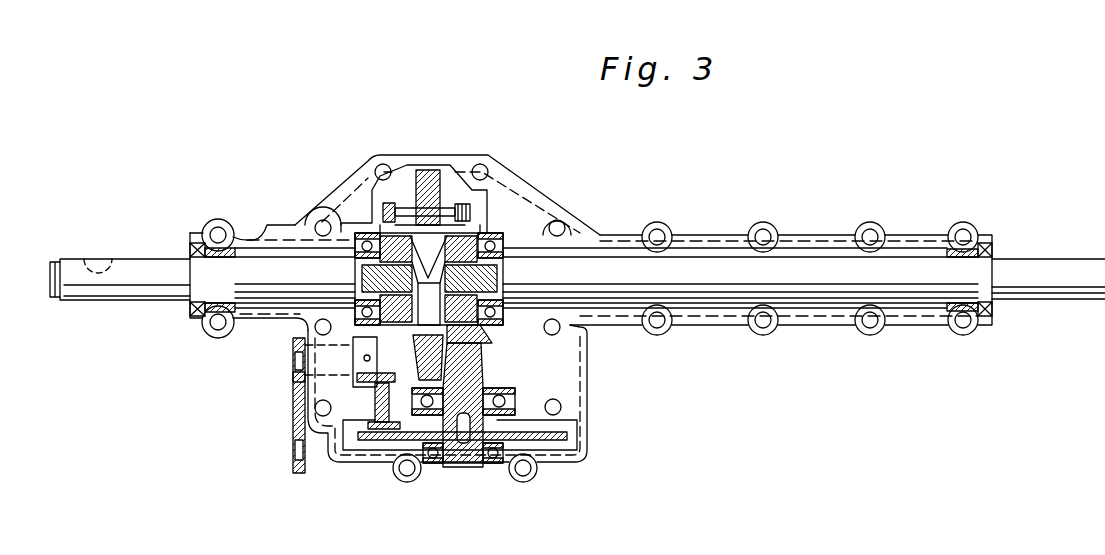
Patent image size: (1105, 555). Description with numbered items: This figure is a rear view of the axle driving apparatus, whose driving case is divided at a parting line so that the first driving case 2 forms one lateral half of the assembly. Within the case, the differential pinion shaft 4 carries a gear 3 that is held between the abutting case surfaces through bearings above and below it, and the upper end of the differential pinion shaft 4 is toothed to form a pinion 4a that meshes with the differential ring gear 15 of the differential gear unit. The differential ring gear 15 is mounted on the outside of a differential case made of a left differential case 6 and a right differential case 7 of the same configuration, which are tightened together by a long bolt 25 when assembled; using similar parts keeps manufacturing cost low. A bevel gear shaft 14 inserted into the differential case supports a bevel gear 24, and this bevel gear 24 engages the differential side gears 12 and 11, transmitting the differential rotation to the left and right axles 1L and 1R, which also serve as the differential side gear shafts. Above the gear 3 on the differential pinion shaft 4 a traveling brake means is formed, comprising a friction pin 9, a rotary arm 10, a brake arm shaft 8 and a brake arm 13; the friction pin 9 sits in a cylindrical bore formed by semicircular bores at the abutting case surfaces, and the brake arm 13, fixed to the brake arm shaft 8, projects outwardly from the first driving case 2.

The left axle 1L is at (136, 259).
The right axle 1R is at (1043, 259).
The first driving case 2 is at (540, 188).
The gear 3 is at (575, 438).
The differential pinion shaft 4 is at (470, 457).
The pinion 4a is at (483, 378).
The left differential case 6 is at (362, 352).
The right differential case 7 is at (484, 333).
The brake arm shaft 8 is at (350, 376).
The friction pin 9 is at (377, 400).
The rotary arm 10 is at (355, 381).
The differential side gear 11 is at (487, 230).
The differential side gear 12 is at (392, 236).
The brake arm 13 is at (293, 468).
The bevel gear shaft 14 is at (452, 341).
The differential ring gear 15 is at (420, 360).
The bevel gear 24 is at (485, 290).
The bolt 25 is at (430, 212).